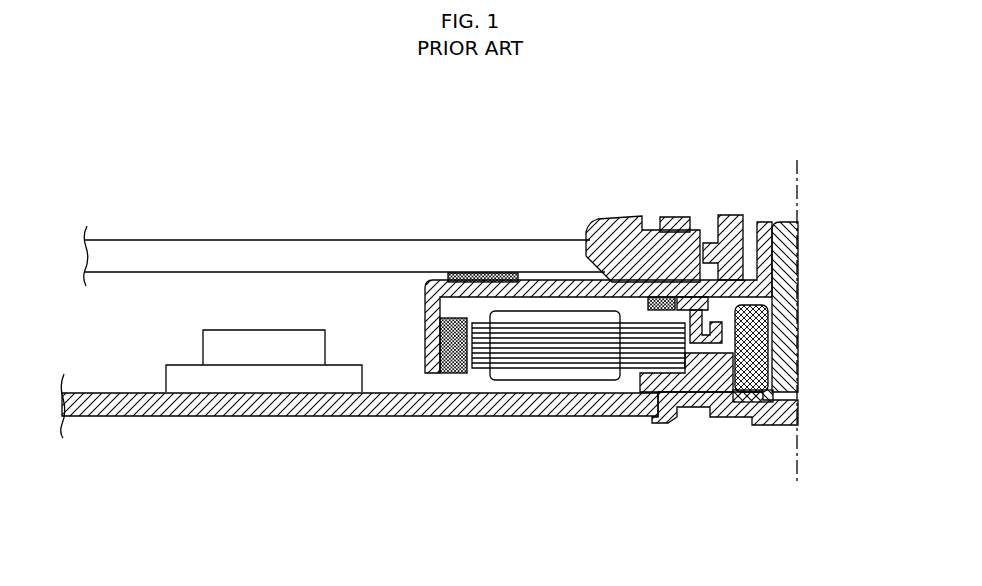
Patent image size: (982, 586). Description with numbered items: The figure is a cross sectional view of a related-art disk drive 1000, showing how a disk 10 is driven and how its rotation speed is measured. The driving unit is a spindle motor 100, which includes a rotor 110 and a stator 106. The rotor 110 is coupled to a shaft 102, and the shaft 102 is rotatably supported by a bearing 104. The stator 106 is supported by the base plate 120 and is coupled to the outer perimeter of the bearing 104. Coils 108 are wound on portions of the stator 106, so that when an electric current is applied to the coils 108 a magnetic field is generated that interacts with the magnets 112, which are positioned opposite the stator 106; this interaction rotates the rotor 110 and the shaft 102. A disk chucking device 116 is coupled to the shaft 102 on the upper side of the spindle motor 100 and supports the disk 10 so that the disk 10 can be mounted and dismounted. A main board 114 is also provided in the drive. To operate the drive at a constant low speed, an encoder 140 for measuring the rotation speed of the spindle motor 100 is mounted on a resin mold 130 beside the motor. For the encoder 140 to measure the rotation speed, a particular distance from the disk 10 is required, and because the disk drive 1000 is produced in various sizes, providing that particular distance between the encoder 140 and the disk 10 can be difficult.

The disk drive 1000 is at (746, 134).
The disk 10 is at (272, 243).
The spindle motor 100 is at (863, 206).
The shaft 102 is at (782, 298).
The bearing 104 is at (705, 364).
The stator 106 is at (757, 355).
The coil 108 is at (765, 400).
The rotor 110 is at (780, 260).
The magnet 112 is at (467, 371).
The main board 114 is at (487, 388).
The disk chucking device 116 is at (745, 216).
The base plate 120 is at (258, 413).
The resin mold 130 is at (180, 373).
The encoder 140 is at (226, 339).